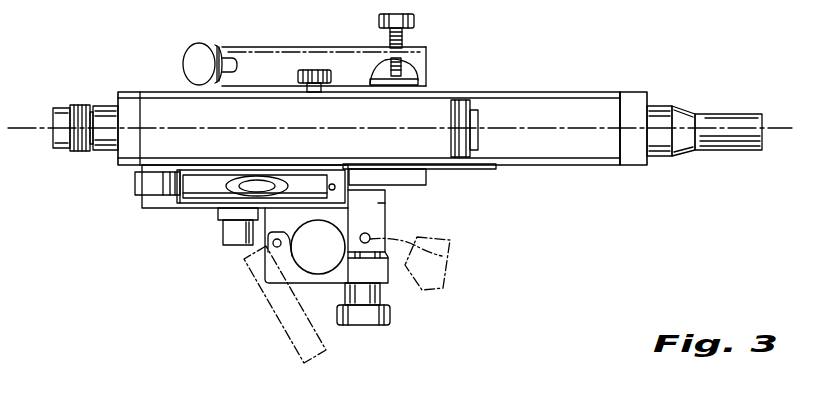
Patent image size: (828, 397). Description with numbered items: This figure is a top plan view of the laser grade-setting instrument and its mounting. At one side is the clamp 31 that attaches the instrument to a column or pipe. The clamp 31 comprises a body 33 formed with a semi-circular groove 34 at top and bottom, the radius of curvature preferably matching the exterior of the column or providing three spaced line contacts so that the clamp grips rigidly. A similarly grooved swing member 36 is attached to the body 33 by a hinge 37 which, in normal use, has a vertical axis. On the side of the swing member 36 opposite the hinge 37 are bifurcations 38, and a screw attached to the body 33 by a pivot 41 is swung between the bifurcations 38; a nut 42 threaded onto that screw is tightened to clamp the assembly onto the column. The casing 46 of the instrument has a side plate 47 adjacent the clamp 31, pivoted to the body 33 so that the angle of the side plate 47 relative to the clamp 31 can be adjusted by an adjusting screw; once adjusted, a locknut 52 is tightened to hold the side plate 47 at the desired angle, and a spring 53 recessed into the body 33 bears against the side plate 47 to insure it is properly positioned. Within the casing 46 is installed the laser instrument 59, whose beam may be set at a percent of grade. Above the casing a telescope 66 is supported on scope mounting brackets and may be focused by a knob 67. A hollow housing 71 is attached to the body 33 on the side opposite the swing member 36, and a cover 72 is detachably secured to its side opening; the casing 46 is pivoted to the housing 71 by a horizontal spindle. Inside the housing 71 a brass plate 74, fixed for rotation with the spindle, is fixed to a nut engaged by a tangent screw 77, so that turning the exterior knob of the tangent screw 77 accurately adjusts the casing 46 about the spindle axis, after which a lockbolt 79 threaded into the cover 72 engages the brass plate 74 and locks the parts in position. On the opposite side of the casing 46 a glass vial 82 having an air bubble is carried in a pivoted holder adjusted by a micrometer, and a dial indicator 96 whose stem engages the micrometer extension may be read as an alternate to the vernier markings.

The clamp 31 is at (416, 221).
The body 33 is at (385, 203).
The semi-circular groove 34 is at (302, 258).
The swing member 36 is at (390, 284).
The hinge 37 is at (248, 277).
The bifurcations 38 is at (341, 278).
The pivot 41 is at (419, 263).
The nut 42 is at (362, 326).
The casing 46 is at (472, 169).
The side plate 47 is at (427, 186).
The locknut 52 is at (233, 247).
The spring 53 is at (399, 169).
The laser instrument 59 is at (715, 179).
The telescope 66 is at (73, 151).
The knob 67 is at (318, 70).
The hollow housing 71 is at (424, 68).
The cover 72 is at (277, 47).
The brass plate 74 is at (418, 78).
The tangent screw 77 is at (192, 62).
The lockbolt 79 is at (414, 22).
The glass vial 82 is at (248, 187).
The dial indicator 96 is at (126, 177).